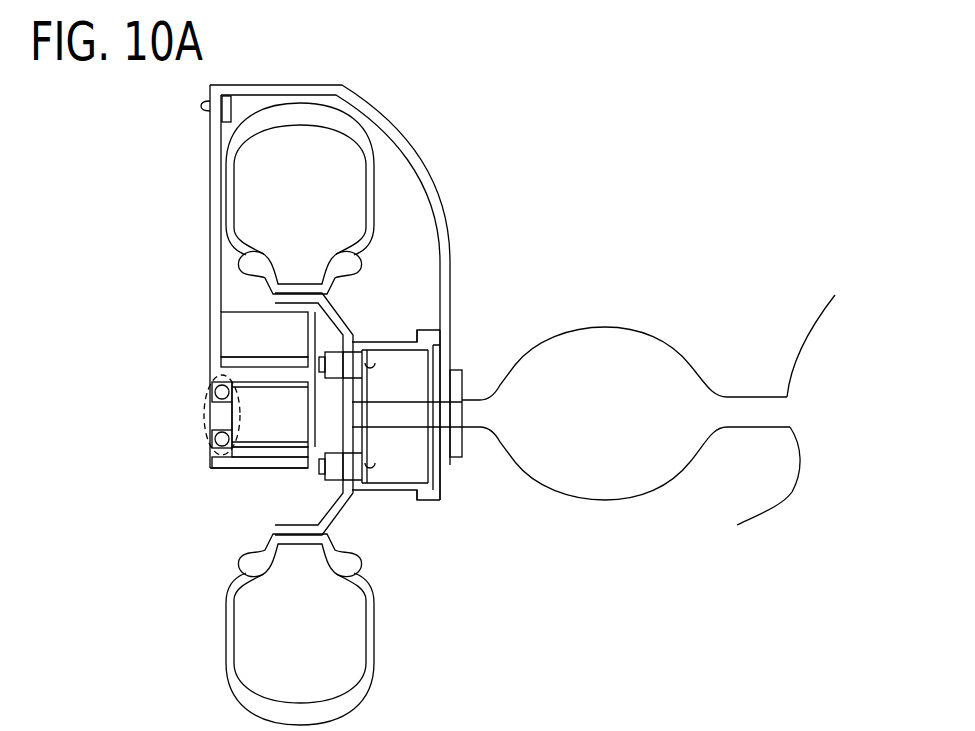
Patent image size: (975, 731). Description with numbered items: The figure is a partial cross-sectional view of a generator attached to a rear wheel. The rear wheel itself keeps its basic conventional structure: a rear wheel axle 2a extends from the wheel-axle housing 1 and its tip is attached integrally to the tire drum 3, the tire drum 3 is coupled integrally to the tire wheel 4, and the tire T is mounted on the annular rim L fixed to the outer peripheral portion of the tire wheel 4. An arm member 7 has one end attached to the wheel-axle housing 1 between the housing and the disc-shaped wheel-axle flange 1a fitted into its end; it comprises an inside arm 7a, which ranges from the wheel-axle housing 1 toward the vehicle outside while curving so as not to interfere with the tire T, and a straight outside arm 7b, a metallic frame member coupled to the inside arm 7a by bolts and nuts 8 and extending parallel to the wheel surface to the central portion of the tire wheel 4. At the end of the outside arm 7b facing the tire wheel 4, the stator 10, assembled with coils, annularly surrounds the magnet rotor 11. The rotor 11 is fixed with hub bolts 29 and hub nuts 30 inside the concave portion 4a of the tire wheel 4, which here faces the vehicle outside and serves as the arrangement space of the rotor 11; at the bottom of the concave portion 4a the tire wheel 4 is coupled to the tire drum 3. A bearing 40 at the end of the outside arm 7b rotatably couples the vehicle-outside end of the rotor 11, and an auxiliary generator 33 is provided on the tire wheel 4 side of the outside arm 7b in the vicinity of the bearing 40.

The wheel-axle housing 1 is at (478, 430).
The wheel-axle flange 1a is at (432, 500).
The rear wheel axle 2a is at (395, 400).
The tire drum 3 is at (396, 496).
The tire wheel 4 is at (338, 306).
The concave portion 4a is at (308, 452).
The arm member 7 is at (338, 260).
The inside arm 7a is at (448, 234).
The outside arm 7b is at (217, 210).
The bolts and nuts 8 is at (204, 113).
The stator 10 is at (264, 366).
The rotor 11 is at (292, 408).
The hub bolts 29 is at (334, 468).
The hub nuts 30 is at (323, 482).
The auxiliary generator 33 is at (258, 331).
The bearing 40 is at (204, 400).
The tire T is at (352, 124).
The rim L is at (358, 272).